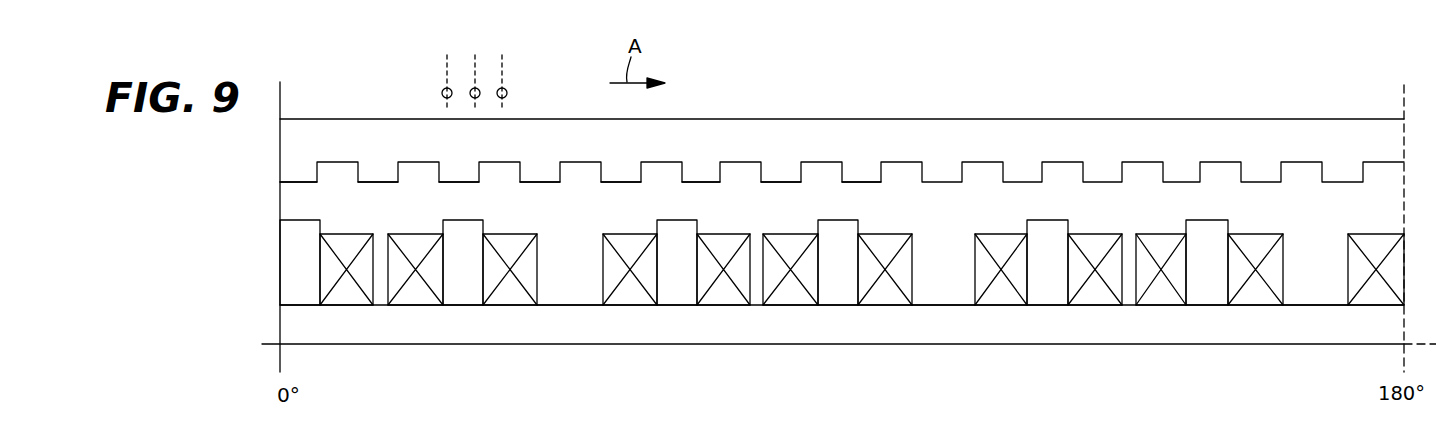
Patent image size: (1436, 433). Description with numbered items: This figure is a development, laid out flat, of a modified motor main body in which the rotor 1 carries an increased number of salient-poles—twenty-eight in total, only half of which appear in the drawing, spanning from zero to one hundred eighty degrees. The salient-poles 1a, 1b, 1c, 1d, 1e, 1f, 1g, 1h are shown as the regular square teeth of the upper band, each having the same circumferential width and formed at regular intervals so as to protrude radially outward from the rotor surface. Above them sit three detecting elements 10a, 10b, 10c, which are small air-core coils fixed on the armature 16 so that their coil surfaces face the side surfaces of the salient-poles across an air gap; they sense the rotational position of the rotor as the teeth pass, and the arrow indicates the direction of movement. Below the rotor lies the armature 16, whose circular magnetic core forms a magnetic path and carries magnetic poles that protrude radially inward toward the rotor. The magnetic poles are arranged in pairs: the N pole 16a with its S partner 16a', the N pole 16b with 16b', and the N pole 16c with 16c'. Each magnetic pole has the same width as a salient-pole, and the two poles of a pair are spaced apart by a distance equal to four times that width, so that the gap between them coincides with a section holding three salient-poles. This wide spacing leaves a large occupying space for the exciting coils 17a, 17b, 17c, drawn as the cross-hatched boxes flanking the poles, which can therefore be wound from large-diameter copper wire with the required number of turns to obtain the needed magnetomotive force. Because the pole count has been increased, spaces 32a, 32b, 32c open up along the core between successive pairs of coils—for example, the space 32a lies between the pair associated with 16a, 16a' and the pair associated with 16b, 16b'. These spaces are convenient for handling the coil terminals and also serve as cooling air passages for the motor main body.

The rotor 1 is at (352, 128).
The salient-pole 1a is at (295, 181).
The salient-pole 1b is at (372, 181).
The salient-pole 1c is at (452, 181).
The salient-pole 1d is at (535, 181).
The salient-pole 1e is at (612, 181).
The salient-pole 1f is at (694, 181).
The salient-pole 1g is at (775, 181).
The salient-pole 1h is at (854, 181).
The detecting element 10a is at (448, 87).
The detecting element 10b is at (477, 87).
The detecting element 10c is at (505, 87).
The armature 16 is at (408, 333).
The magnetic pole 16a is at (301, 268).
The magnetic pole 16b is at (679, 266).
The magnetic pole 16c is at (1047, 265).
The magnetic pole 16a' is at (467, 268).
The magnetic pole 16b' is at (841, 266).
The magnetic pole 16c' is at (1210, 265).
The exciting coil 17a is at (348, 298).
The exciting coil 17b is at (727, 295).
The exciting coil 17c is at (1097, 295).
The space 32a is at (572, 298).
The space 32b is at (948, 293).
The space 32c is at (1317, 295).